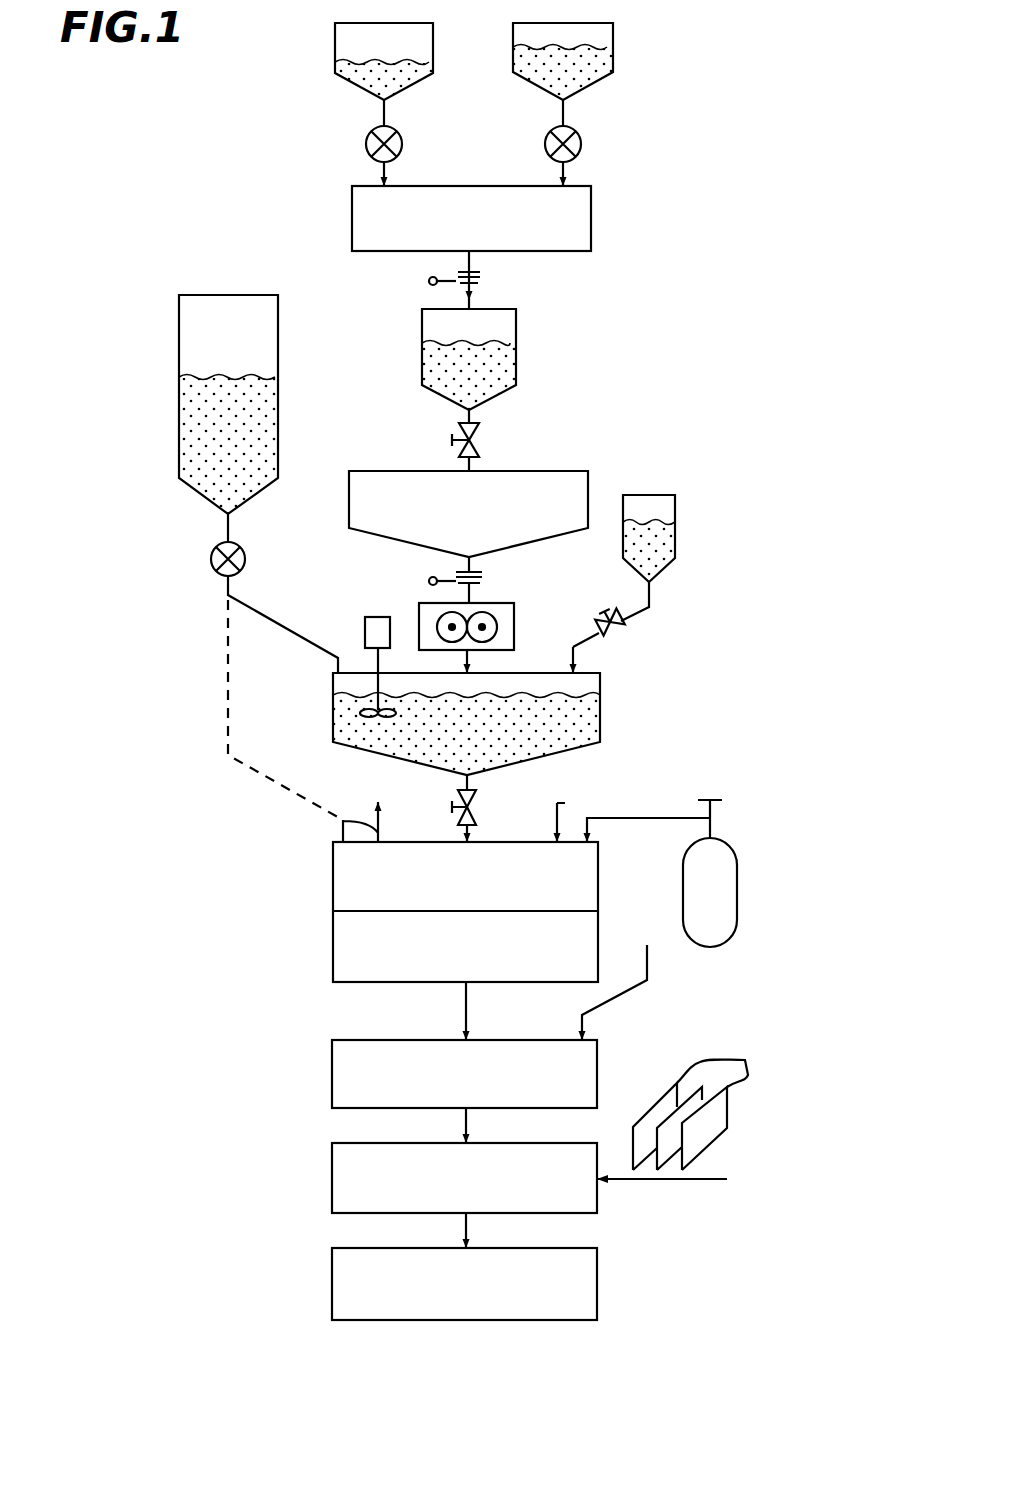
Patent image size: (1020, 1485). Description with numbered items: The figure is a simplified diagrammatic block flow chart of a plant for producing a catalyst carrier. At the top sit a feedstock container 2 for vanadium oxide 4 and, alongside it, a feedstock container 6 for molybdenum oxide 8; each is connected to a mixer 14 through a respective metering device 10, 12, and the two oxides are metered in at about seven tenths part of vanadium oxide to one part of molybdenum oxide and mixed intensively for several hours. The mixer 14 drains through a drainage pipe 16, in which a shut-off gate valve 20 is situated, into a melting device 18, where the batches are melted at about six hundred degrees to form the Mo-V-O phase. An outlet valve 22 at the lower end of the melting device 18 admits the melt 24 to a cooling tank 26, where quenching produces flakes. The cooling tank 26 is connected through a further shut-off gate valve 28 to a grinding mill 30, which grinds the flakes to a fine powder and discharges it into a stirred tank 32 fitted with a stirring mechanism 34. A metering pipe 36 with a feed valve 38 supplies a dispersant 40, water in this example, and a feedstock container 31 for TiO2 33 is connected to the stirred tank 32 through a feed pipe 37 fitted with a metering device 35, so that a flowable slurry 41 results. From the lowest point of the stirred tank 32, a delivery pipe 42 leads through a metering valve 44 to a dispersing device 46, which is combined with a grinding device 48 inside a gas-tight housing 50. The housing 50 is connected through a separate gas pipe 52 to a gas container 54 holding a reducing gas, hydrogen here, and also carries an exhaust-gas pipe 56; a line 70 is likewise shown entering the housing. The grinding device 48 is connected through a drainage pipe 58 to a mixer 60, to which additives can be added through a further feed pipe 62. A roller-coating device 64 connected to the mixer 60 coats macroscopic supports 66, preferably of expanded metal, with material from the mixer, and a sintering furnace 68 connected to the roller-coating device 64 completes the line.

The feedstock container 2 is at (613, 35).
The vanadium oxide 4 is at (535, 85).
The feedstock container 6 is at (335, 35).
The molybdenum oxide 8 is at (355, 88).
The metering device 10 is at (400, 135).
The metering device 12 is at (581, 135).
The mixer 14 is at (591, 208).
The drainage pipe 16 is at (473, 295).
The melting device 18 is at (517, 318).
The shut-off gate valve 20 is at (429, 281).
The outlet valve 22 is at (480, 440).
The melt 24 is at (505, 365).
The cooling tank 26 is at (349, 512).
The shut-off gate valve 28 is at (429, 581).
The grinding mill 30 is at (514, 620).
The feedstock container 31 is at (278, 340).
The stirred tank 32 is at (333, 735).
The TiO2 33 is at (195, 440).
The stirring mechanism 34 is at (372, 617).
The metering device 35 is at (211, 559).
The metering pipe 36 is at (576, 655).
The feed pipe 37 is at (279, 624).
The feed valve 38 is at (640, 611).
The dispersant 40 is at (676, 530).
The slurry 41 is at (585, 715).
The delivery pipe 42 is at (480, 822).
The metering valve 44 is at (457, 790).
The dispersing device 46 is at (575, 882).
The grinding device 48 is at (345, 962).
The gas-tight housing 50 is at (333, 911).
The gas pipe 52 is at (690, 818).
The gas container 54 is at (738, 895).
The exhaust-gas pipe 56 is at (343, 820).
The drainage pipe 58 is at (466, 1005).
The mixer 60 is at (332, 1085).
The feed pipe 62 is at (618, 1000).
The roller-coating device 64 is at (332, 1186).
The macroscopic supports 66 is at (745, 1060).
The sintering furnace 68 is at (332, 1292).
The line 70 is at (565, 803).